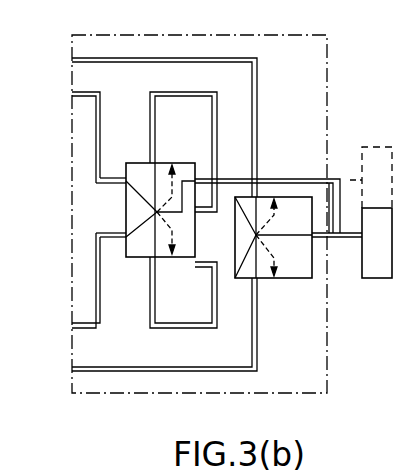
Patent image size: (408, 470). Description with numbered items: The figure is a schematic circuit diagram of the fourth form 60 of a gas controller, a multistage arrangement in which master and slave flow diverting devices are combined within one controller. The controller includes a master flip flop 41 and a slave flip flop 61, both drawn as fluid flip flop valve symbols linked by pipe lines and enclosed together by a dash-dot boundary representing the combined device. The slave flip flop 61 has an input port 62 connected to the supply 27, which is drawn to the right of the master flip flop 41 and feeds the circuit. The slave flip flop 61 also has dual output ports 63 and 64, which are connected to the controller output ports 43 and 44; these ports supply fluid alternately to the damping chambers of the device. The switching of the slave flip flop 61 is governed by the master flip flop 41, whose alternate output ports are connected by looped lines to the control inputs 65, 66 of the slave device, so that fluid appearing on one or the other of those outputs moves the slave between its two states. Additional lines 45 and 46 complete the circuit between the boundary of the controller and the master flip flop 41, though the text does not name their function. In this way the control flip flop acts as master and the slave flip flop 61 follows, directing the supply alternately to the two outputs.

The fourth form 60 is at (117, 405).
The supply line 45 is at (72, 58).
The controller output port 43 is at (72, 94).
The output port 63 is at (118, 187).
The output port 64 is at (118, 223).
The controller output port 44 is at (72, 327).
The return line 46 is at (72, 367).
The control input 65 is at (152, 163).
The control input 66 is at (148, 258).
The input port 62 is at (266, 178).
The slave flip flop 61 is at (172, 258).
The master flip flop 41 is at (275, 280).
The supply 27 is at (373, 265).